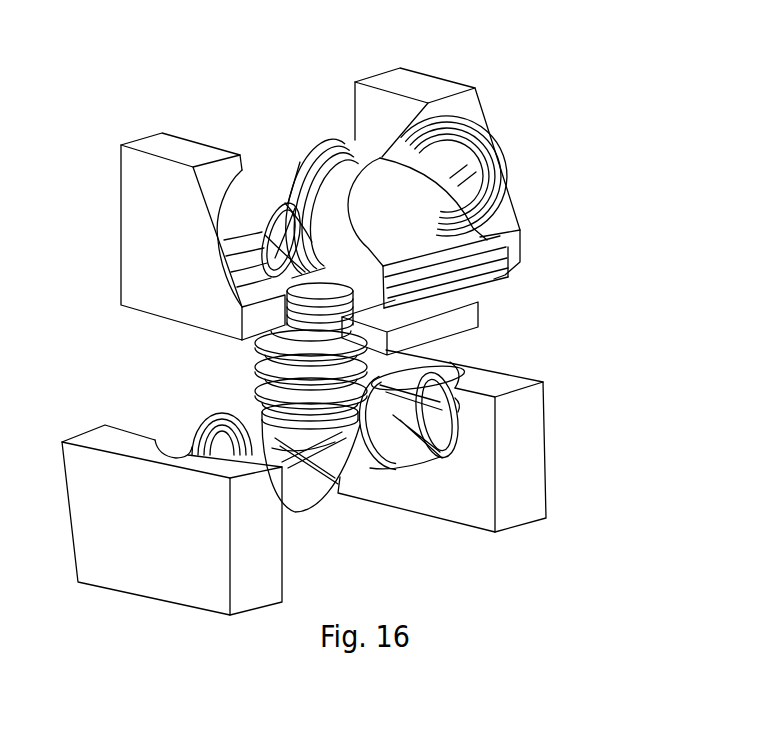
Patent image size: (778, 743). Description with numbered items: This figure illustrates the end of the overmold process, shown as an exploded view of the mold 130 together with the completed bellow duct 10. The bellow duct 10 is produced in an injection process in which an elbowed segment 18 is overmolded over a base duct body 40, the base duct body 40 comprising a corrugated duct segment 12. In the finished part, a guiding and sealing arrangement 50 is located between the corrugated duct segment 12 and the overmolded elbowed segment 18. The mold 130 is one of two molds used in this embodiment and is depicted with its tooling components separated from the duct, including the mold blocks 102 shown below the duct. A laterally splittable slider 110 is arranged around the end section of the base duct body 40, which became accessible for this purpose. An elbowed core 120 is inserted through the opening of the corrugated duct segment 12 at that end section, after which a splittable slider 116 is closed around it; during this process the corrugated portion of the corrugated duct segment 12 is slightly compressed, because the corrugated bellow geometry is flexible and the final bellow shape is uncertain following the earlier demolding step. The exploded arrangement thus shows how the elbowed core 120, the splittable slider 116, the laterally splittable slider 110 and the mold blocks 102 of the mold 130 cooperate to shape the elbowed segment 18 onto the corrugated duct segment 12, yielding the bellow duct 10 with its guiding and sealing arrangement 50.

The bellow duct 10 is at (270, 128).
The mold 130 is at (540, 115).
The splittable slider 116 is at (190, 254).
The elbowed core 120 is at (438, 228).
The elbowed segment 18 is at (296, 209).
The corrugated duct segment 12 is at (214, 349).
The base duct body 40 is at (214, 349).
The guiding and sealing arrangement 50 is at (312, 310).
The laterally splittable slider 110 is at (458, 328).
The lower clamp block 102 is at (198, 553).